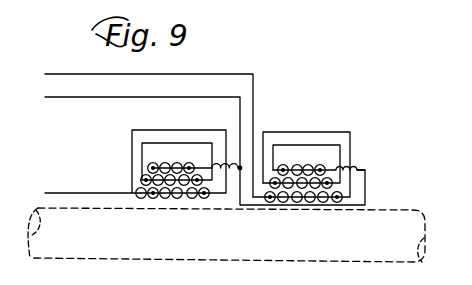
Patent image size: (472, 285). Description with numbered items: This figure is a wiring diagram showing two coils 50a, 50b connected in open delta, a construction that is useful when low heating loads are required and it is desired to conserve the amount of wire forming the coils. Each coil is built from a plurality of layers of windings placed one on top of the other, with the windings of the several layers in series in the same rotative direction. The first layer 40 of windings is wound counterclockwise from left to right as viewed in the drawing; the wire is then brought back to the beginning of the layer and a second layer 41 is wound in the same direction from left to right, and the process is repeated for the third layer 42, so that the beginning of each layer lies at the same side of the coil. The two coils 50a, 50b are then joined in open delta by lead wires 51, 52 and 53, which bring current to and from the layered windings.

The first layer of windings 40 is at (141, 193).
The second layer of windings 41 is at (170, 180).
The third layer of windings 42 is at (179, 153).
The coil 50a is at (222, 213).
The coil 50b is at (357, 215).
The lead wire 51 is at (172, 97).
The lead wire 52 is at (200, 74).
The lead wire 53 is at (93, 193).